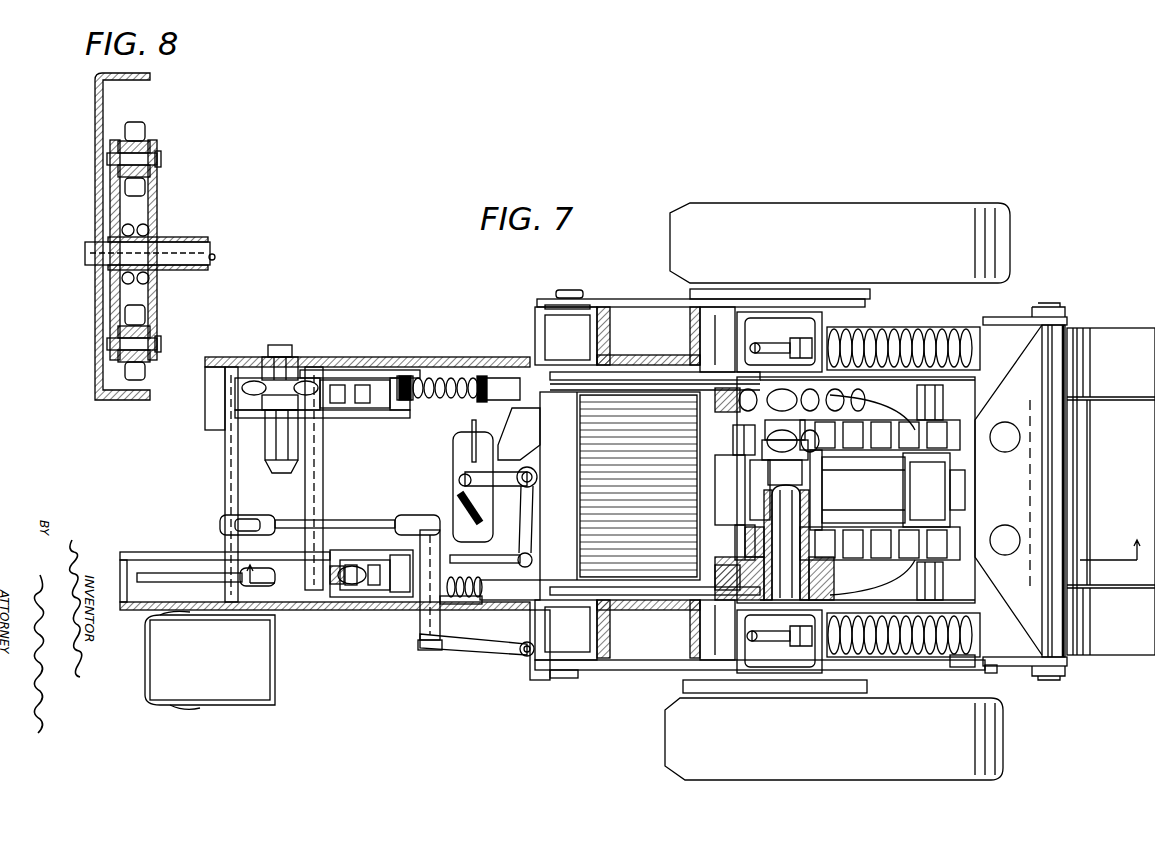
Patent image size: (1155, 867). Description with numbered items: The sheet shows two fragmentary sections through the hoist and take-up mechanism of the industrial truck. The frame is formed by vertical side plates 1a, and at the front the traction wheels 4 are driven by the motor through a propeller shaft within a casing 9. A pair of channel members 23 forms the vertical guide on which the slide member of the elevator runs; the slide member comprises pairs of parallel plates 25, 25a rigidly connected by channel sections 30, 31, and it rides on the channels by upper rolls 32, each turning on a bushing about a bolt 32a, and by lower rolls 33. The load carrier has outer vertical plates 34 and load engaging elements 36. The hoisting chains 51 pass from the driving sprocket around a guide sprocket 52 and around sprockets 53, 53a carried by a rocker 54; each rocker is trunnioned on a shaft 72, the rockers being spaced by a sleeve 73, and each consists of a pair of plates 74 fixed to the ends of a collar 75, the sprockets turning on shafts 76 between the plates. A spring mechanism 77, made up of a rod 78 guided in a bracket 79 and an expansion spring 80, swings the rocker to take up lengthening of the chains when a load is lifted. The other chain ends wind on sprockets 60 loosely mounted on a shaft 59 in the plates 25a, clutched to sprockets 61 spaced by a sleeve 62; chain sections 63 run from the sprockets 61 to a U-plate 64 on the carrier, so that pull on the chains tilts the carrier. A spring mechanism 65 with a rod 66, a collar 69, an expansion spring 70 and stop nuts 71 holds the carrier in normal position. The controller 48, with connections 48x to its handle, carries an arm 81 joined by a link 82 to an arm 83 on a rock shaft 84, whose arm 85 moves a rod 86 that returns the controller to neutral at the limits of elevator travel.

In FIG. 8, the vertical side plate 1a is at (98, 348).
In FIG. 7, the vertical side plate 1a is at (292, 612).
In FIG. 7, the traction wheel 4 is at (725, 195).
In FIG. 7, the propeller shaft casing 9 is at (863, 490).
In FIG. 7, the channel member 23 is at (637, 350).
In FIG. 7, the outer plate of slide member 25 is at (655, 300).
In FIG. 7, the inner plate of slide member 25a is at (645, 393).
In FIG. 7, the channel section 30 is at (745, 694).
In FIG. 7, the channel section 31 is at (786, 312).
In FIG. 7, the upper roll 32 is at (542, 333).
In FIG. 7, the bolt 32a is at (600, 292).
In FIG. 7, the lower roll 33 is at (698, 635).
In FIG. 7, the outer vertical plate of load carrier 34 is at (1005, 317).
In FIG. 7, the load engaging element 36 is at (1110, 322).
In FIG. 7, the controller 48 is at (276, 685).
In FIG. 7, the connections 48x is at (190, 540).
In FIG. 7, the sprocket chain 51 is at (372, 408).
In FIG. 7, the guide sprocket 52 is at (262, 372).
In FIG. 8, the sprocket on rocker 53 is at (136, 125).
In FIG. 7, the sprocket on rocker 53 is at (350, 592).
In FIG. 8, the sprocket on rocker 53a is at (146, 373).
In FIG. 8, the rocker 54 is at (155, 251).
In FIG. 7, the rocker 54 is at (400, 410).
In FIG. 7, the shaft 59 is at (812, 498).
In FIG. 7, the sprocket 60 is at (712, 400).
In FIG. 7, the sprocket 61 is at (733, 438).
In FIG. 7, the sleeve 62 is at (812, 480).
In FIG. 7, the chain section 63 is at (934, 490).
In FIG. 7, the U-plate 64 is at (1054, 471).
In FIG. 7, the spring mechanism 65 is at (975, 660).
In FIG. 7, the rod 66 is at (780, 340).
In FIG. 7, the collar 69 is at (993, 673).
In FIG. 7, the expansion spring 70 is at (900, 338).
In FIG. 7, the nuts 71 is at (790, 352).
In FIG. 8, the shaft 72 is at (214, 256).
In FIG. 8, the sleeve 73 is at (160, 243).
In FIG. 7, the sleeve 73 is at (324, 486).
In FIG. 8, the rocker plate 74 is at (160, 176).
In FIG. 7, the rocker plate 74 is at (345, 370).
In FIG. 8, the collar 75 is at (150, 283).
In FIG. 8, the shaft 76 is at (162, 158).
In FIG. 7, the spring mechanism 77 is at (460, 424).
In FIG. 7, the rod 78 is at (540, 412).
In FIG. 7, the bracket 79 is at (475, 630).
In FIG. 7, the expansion spring 80 is at (446, 376).
In FIG. 7, the arm 81 is at (222, 523).
In FIG. 7, the link 82 is at (300, 520).
In FIG. 7, the arm 83 is at (438, 511).
In FIG. 7, the rock shaft 84 is at (425, 652).
In FIG. 7, the arm 85 is at (470, 652).
In FIG. 7, the rod 86 is at (523, 657).